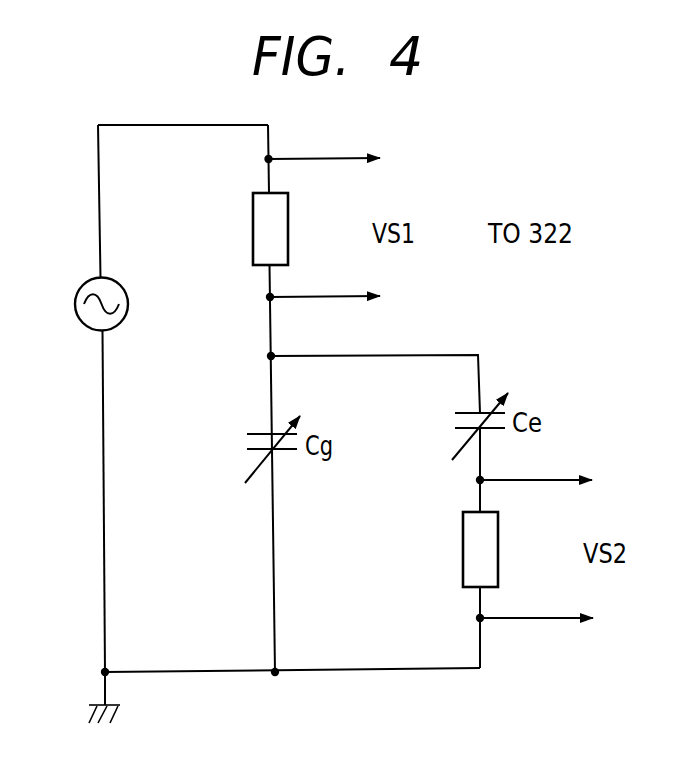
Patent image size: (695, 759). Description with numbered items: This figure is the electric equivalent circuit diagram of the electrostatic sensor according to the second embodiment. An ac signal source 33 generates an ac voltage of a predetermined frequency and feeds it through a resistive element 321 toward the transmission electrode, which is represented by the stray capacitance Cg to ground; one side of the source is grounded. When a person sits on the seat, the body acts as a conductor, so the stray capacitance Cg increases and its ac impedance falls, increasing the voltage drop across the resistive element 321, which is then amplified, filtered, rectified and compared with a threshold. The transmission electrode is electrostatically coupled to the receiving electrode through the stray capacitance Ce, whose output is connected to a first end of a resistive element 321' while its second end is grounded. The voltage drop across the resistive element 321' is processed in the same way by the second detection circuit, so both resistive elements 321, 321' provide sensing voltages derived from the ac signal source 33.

The ac signal source 33 is at (81, 322).
The resistive element 321 is at (233, 238).
The resistive element 321' is at (442, 554).